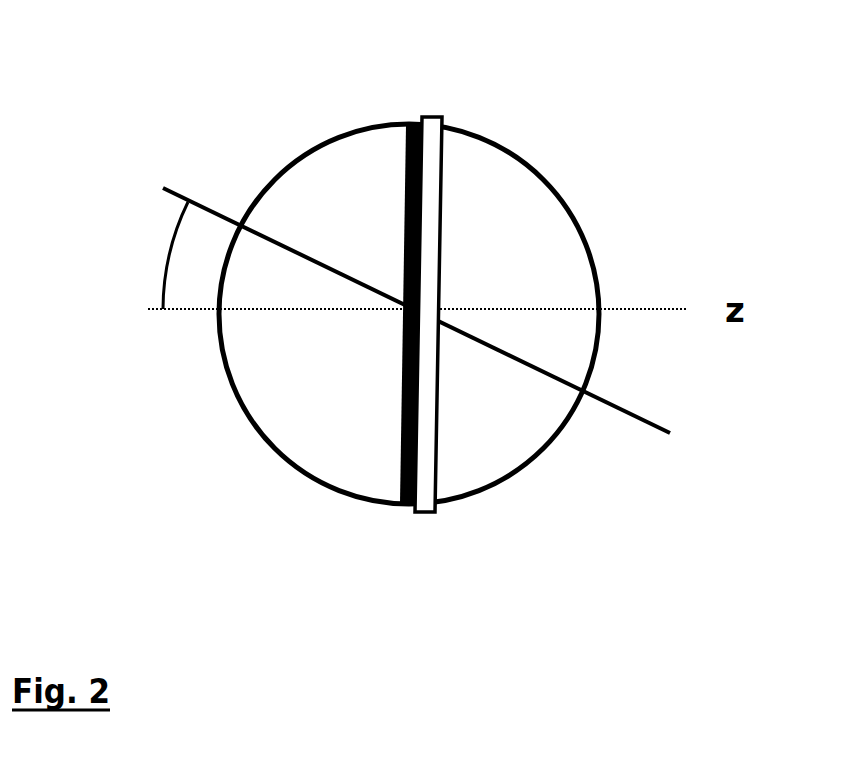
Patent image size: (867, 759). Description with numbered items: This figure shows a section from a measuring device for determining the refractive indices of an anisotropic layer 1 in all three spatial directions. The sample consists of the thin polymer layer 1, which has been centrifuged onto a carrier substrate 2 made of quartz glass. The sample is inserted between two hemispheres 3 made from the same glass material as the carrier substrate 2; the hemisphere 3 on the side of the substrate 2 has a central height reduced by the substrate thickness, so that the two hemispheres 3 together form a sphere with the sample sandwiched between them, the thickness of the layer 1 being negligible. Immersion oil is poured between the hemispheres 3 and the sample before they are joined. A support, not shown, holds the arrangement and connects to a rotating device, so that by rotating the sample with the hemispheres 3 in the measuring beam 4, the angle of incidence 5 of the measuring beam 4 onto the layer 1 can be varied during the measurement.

The anisotropic layer 1 is at (396, 468).
The carrier substrate 2 is at (428, 502).
The hemisphere 3 is at (328, 188).
The measuring beam 4 is at (454, 330).
The angle of incidence 5 is at (160, 255).